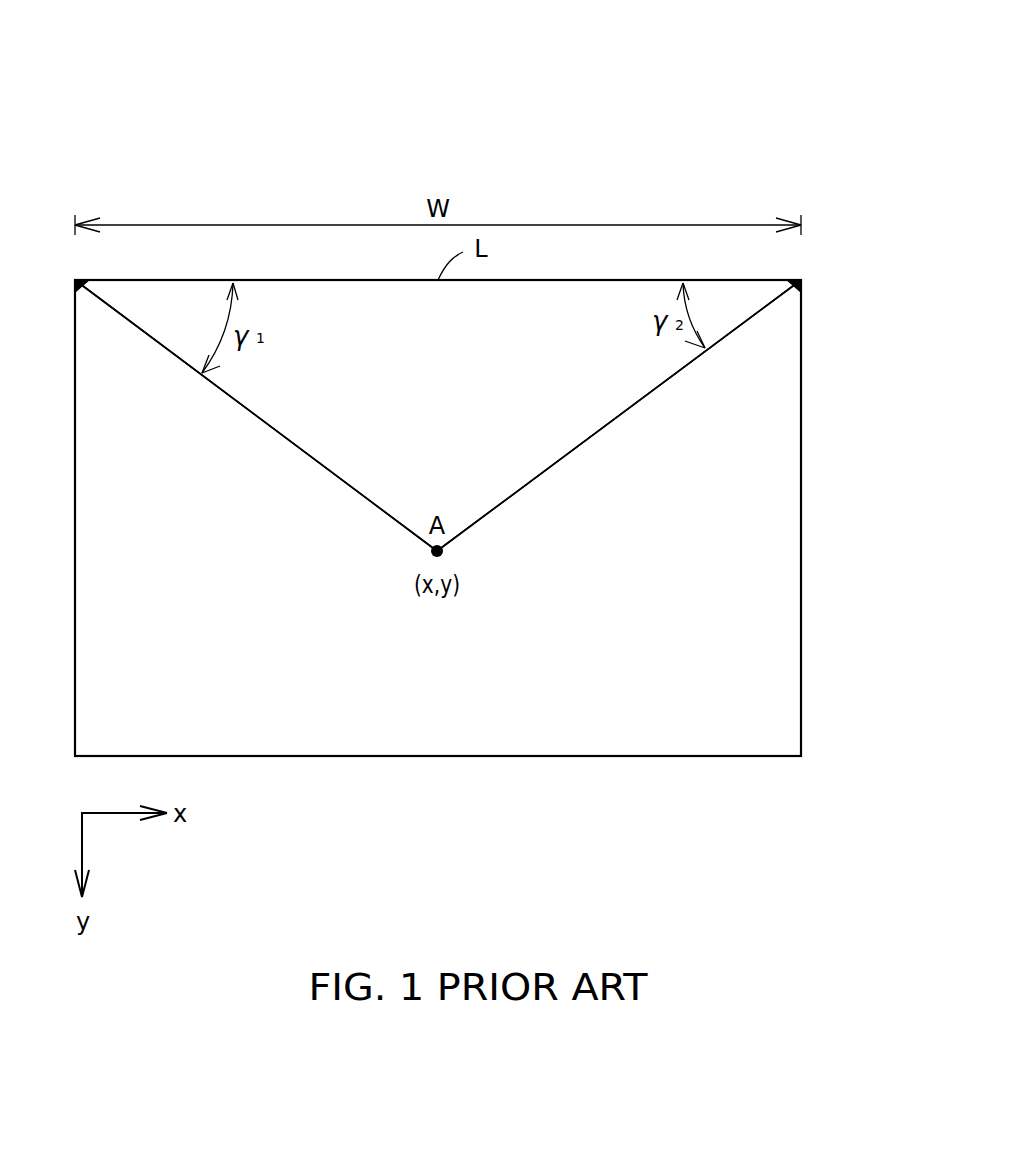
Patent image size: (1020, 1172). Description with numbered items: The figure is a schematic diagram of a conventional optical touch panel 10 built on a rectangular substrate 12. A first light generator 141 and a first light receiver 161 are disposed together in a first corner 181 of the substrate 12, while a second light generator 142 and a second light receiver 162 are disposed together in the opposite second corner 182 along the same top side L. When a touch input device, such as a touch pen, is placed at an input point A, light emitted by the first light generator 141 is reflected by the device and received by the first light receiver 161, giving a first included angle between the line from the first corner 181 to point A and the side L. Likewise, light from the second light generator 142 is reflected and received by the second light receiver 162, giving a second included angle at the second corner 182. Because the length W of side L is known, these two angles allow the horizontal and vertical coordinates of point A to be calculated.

The optical touch panel 10 is at (733, 108).
The substrate 12 is at (801, 518).
The first light generator 141 is at (86, 278).
The second light generator 142 is at (790, 278).
The first light receiver 161 is at (256, 415).
The second light receiver 162 is at (619, 415).
The first corner 181 is at (74, 278).
The second corner 182 is at (803, 278).